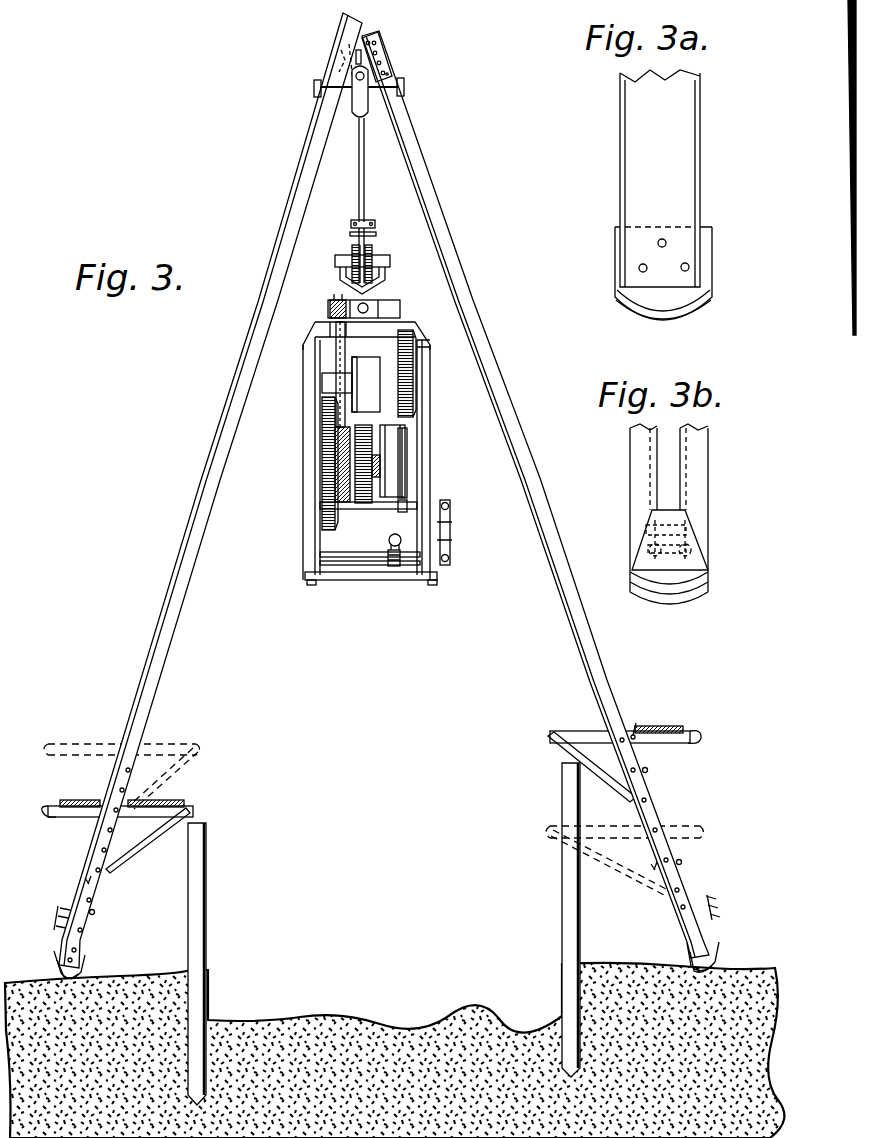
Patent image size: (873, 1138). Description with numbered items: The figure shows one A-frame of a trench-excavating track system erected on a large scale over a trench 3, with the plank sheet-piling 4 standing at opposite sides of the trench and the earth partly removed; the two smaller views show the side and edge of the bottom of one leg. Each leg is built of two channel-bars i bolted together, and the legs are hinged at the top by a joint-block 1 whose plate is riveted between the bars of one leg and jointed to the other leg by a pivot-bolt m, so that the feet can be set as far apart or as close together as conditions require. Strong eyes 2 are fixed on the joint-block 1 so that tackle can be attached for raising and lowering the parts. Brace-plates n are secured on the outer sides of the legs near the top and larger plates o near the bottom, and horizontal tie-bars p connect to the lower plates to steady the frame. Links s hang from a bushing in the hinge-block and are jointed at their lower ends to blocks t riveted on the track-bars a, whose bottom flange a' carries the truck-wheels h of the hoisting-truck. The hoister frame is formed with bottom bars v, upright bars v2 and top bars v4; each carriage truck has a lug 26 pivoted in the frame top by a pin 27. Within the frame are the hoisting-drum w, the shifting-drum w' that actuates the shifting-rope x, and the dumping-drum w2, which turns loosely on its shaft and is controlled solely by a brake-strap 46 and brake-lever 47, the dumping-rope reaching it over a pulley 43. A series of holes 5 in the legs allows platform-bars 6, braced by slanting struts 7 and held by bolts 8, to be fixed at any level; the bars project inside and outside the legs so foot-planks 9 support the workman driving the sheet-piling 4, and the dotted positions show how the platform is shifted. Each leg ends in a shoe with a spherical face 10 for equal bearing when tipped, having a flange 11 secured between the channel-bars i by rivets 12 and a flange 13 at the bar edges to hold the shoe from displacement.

In FIG. 3, the joint-block 1 is at (350, 72).
In FIG. 3, the eyes 2 is at (382, 46).
In FIG. 3, the trench 3 is at (401, 1024).
In FIG. 3, the sheet-piling 4 is at (207, 917).
In FIG. 3, the holes 5 is at (95, 911).
In FIG. 3, the platform-bars 6 is at (58, 819).
In FIG. 3, the slanting struts 7 is at (140, 848).
In FIG. 3, the bolts 8 is at (633, 730).
In FIG. 3, the foot-planks 9 is at (78, 802).
In FIG. 3, the spherical face 10 is at (82, 962).
In FIG. 3A, the spherical face 10 is at (692, 302).
In FIG. 3B, the spherical face 10 is at (702, 604).
In FIG. 3A, the flange 11 is at (688, 226).
In FIG. 3A, the rivets 12 is at (690, 267).
In FIG. 3A, the flange 13 is at (615, 266).
In FIG. 3B, the flange 13 is at (700, 546).
In FIG. 3, the lug 26 is at (388, 284).
In FIG. 3, the pin 27 is at (400, 309).
In FIG. 3, the pulley 43 is at (334, 316).
In FIG. 3, the brake-strap 46 is at (405, 444).
In FIG. 3, the brake-lever 47 is at (388, 545).
In FIG. 3, the pivot-bolt m is at (350, 56).
In FIG. 3, the brace-plates n is at (314, 88).
In FIG. 3, the channel-bars i is at (200, 476).
In FIG. 3A, the channel-bars i is at (660, 178).
In FIG. 3, the links s is at (365, 165).
In FIG. 3, the blocks t is at (354, 223).
In FIG. 3, the truck-wheels h is at (352, 250).
In FIG. 3, the track-bars a is at (375, 235).
In FIG. 3, the bottom flange a' is at (320, 300).
In FIG. 3, the bottom bars v is at (375, 580).
In FIG. 3, the upright bars v2 is at (436, 480).
In FIG. 3, the top bars v4 is at (430, 326).
In FIG. 3, the shifting-rope x is at (336, 350).
In FIG. 3, the hoisting-drum w is at (405, 373).
In FIG. 3, the shifting-drum w' is at (302, 465).
In FIG. 3, the dumping-drum w2 is at (395, 462).
In FIG. 3, the plates o is at (72, 902).
In FIG. 3, the tie-bars p is at (58, 918).